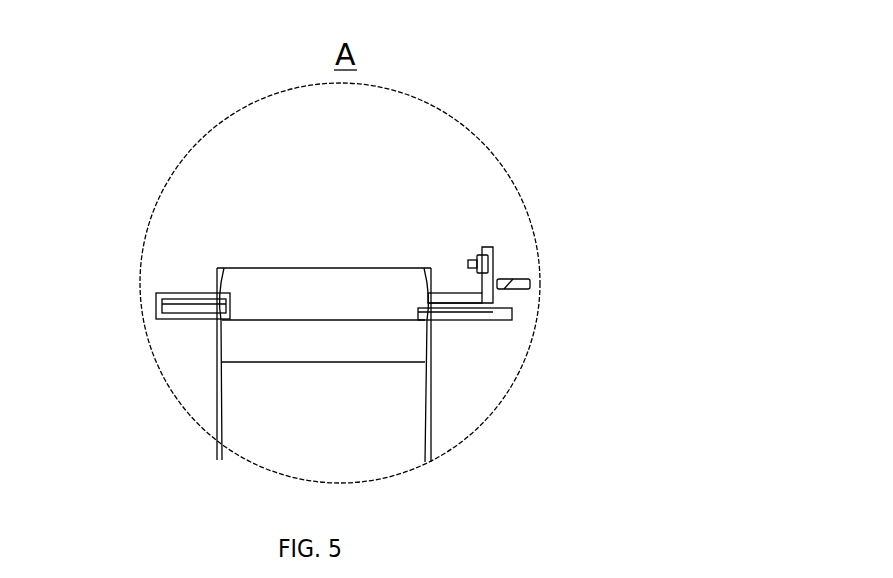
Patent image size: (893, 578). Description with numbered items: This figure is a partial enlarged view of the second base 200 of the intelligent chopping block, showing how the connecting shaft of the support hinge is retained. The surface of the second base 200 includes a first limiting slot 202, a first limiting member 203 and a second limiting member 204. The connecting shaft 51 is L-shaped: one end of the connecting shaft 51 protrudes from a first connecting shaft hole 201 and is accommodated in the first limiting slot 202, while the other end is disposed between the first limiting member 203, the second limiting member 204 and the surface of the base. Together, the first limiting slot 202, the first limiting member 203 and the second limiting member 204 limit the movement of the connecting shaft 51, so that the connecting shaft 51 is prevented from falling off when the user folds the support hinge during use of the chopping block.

The second base 200 is at (562, 75).
The first connecting shaft hole 201 is at (222, 297).
The connecting shaft 51 is at (180, 303).
The first limiting slot 202 is at (158, 297).
The first limiting member 203 is at (478, 257).
The second limiting member 204 is at (508, 283).